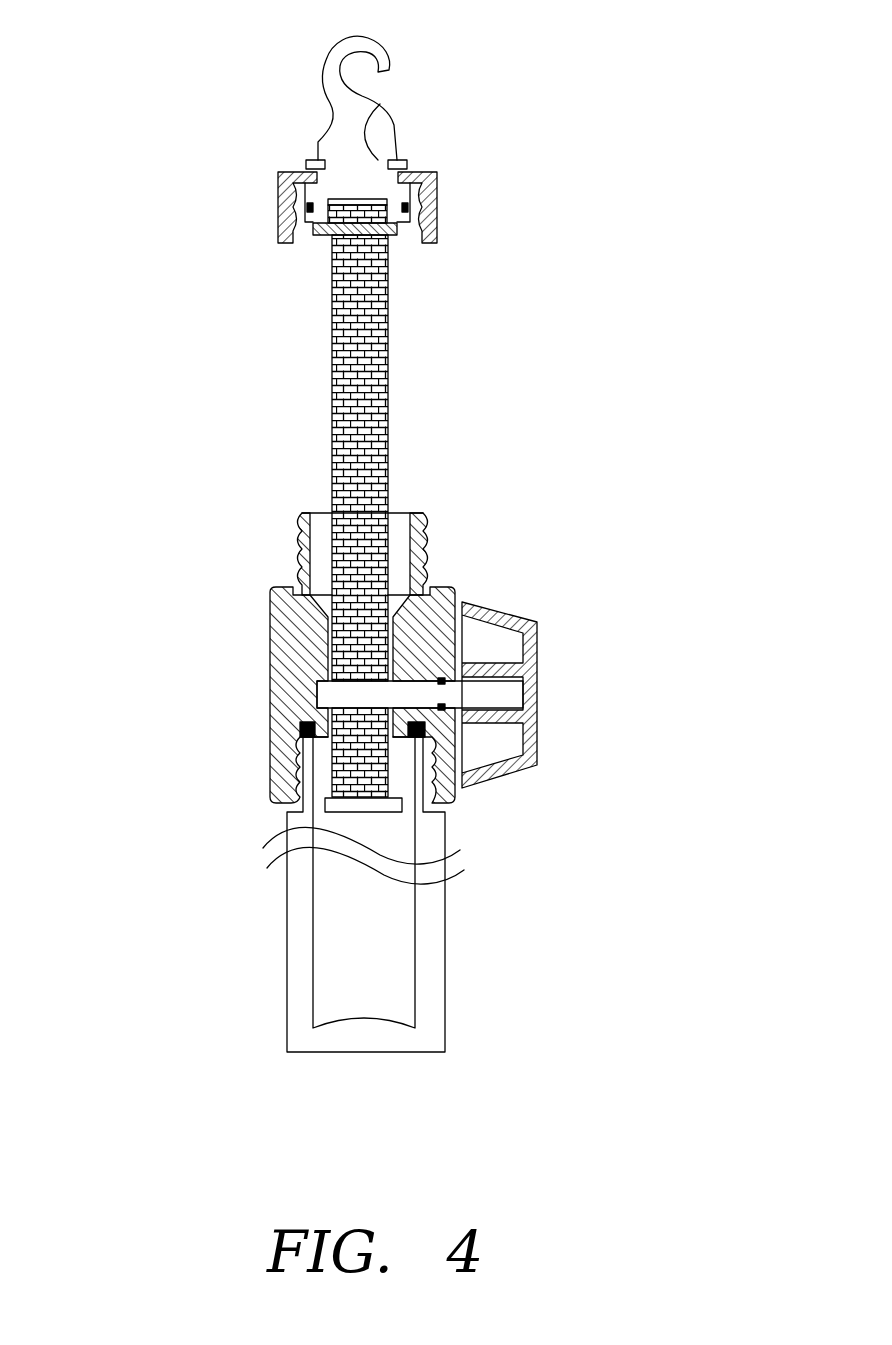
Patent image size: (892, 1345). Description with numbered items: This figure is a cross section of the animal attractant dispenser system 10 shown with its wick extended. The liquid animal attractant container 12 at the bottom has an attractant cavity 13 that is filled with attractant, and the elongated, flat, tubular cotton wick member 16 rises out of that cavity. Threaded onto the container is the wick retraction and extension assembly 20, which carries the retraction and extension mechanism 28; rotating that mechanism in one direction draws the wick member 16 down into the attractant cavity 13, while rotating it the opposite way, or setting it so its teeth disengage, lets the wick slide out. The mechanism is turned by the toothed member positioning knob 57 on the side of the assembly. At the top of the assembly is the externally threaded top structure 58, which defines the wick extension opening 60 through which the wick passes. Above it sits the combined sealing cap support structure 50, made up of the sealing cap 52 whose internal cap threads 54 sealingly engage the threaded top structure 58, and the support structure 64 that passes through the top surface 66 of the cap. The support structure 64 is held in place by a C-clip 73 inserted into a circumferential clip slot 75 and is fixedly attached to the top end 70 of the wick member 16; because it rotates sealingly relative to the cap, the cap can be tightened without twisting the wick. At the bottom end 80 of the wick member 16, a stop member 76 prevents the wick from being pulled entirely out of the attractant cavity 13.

The animal attractant dispenser system 10 is at (124, 405).
The liquid animal attractant container 12 is at (253, 983).
The attractant cavity 13 is at (360, 931).
The wick member 16 is at (355, 372).
The wick retraction and extension assembly 20 is at (228, 628).
The retraction and extension mechanism 28 is at (570, 717).
The combined sealing cap support structure 50 is at (232, 213).
The sealing cap 52 is at (440, 203).
The internal cap threads 54 is at (407, 238).
The toothed member positioning knob 57 is at (508, 608).
The externally threaded top structure 58 is at (295, 542).
The wick extension opening 60 is at (403, 513).
The support structure 64 is at (367, 45).
The top surface 66 is at (282, 171).
The top end 70 is at (348, 222).
The C-clip 73 is at (308, 158).
The circumferential clip slot 75 is at (380, 104).
The stop member 76 is at (365, 812).
The bottom end 80 is at (365, 783).